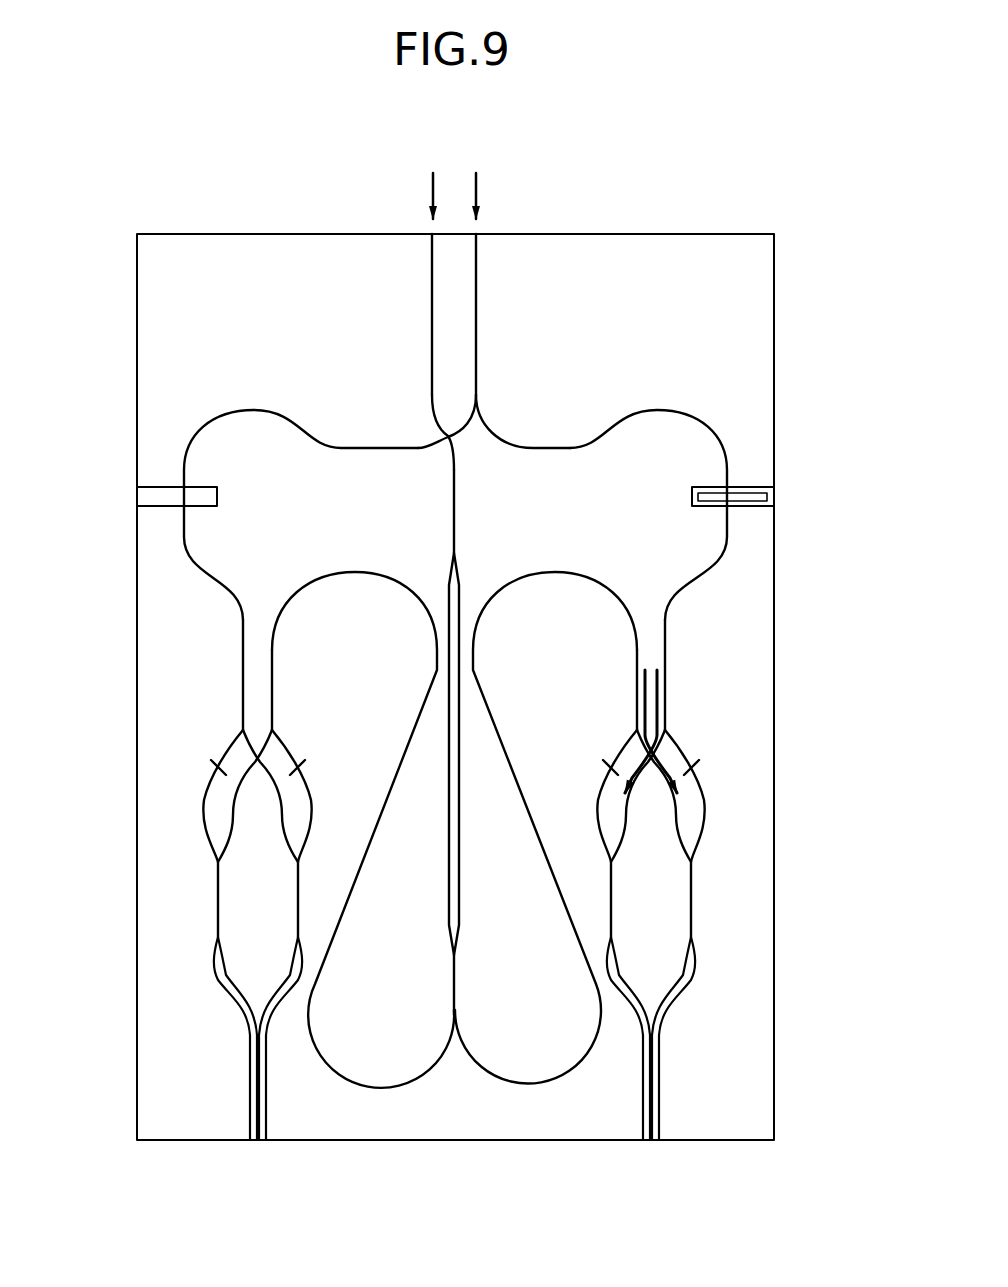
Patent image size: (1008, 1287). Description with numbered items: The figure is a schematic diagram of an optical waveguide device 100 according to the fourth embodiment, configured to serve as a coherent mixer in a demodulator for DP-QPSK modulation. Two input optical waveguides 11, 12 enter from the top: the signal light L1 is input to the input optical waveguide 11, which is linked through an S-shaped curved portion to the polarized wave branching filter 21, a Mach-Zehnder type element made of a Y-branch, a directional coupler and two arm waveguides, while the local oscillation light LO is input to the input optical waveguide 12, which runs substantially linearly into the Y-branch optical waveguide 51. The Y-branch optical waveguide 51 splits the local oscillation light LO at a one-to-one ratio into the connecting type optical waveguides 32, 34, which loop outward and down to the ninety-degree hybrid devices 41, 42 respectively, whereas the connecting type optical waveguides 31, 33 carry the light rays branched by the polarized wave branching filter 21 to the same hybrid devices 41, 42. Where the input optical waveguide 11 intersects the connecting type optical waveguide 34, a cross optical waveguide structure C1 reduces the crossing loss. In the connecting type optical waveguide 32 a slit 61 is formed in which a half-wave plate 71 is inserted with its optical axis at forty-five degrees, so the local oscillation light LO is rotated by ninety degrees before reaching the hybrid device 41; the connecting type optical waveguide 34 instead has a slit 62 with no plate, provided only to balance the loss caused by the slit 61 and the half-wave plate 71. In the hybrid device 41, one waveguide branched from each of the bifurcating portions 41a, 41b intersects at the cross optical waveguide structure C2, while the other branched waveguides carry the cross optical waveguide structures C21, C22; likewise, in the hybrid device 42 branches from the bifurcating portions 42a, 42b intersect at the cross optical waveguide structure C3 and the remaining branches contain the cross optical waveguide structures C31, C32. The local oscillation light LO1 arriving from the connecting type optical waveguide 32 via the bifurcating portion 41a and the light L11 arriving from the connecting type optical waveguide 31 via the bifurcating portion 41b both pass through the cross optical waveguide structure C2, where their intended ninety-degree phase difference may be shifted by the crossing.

The optical waveguide device 100 is at (808, 158).
The input optical waveguide 11 is at (431, 292).
The input optical waveguide 12 is at (478, 292).
The polarized wave branching filter 21 is at (473, 566).
The connecting type optical waveguide 31 is at (517, 818).
The connecting type optical waveguide 32 is at (688, 397).
The connecting type optical waveguide 33 is at (394, 818).
The connecting type optical waveguide 34 is at (227, 397).
The 90° hybrid device 41 is at (694, 746).
The bifurcating portion 41a is at (684, 727).
The bifurcating portion 41b is at (617, 727).
The 90° hybrid device 42 is at (217, 737).
The bifurcating portion 42a is at (239, 727).
The bifurcating portion 42b is at (283, 727).
The Y-branch optical waveguide 51 is at (509, 386).
The slit 61 is at (742, 502).
The slit 62 is at (161, 505).
The half-wave plate 71 is at (768, 498).
The cross optical waveguide structure C1 is at (442, 432).
The cross optical waveguide structure C2 is at (652, 783).
The cross optical waveguide structure C3 is at (258, 783).
The cross optical waveguide structure C21 is at (701, 768).
The cross optical waveguide structure C22 is at (602, 769).
The cross optical waveguide structure C31 is at (309, 769).
The cross optical waveguide structure C32 is at (209, 768).
The light L1 is at (412, 196).
The local oscillation light LO is at (499, 196).
The light L11 is at (641, 684).
The local oscillation light LO1 is at (660, 684).